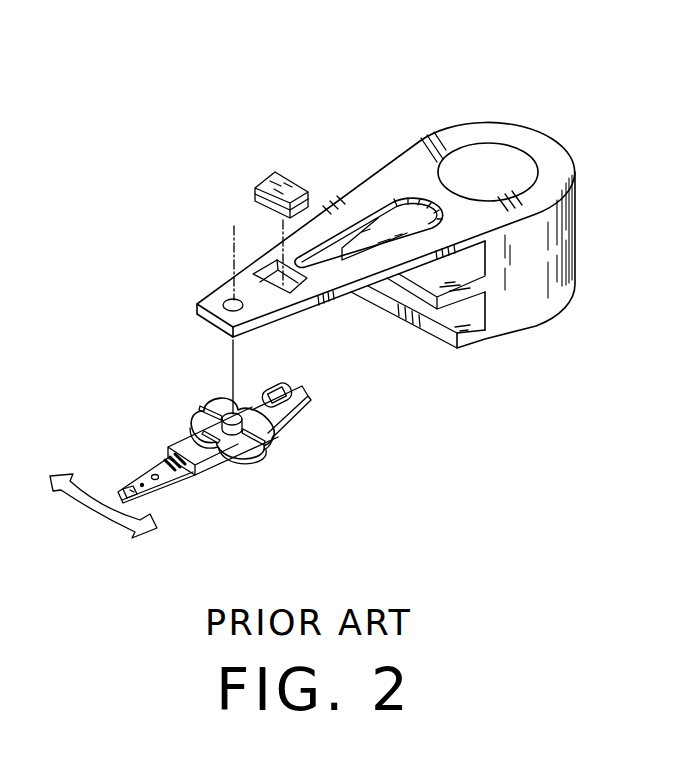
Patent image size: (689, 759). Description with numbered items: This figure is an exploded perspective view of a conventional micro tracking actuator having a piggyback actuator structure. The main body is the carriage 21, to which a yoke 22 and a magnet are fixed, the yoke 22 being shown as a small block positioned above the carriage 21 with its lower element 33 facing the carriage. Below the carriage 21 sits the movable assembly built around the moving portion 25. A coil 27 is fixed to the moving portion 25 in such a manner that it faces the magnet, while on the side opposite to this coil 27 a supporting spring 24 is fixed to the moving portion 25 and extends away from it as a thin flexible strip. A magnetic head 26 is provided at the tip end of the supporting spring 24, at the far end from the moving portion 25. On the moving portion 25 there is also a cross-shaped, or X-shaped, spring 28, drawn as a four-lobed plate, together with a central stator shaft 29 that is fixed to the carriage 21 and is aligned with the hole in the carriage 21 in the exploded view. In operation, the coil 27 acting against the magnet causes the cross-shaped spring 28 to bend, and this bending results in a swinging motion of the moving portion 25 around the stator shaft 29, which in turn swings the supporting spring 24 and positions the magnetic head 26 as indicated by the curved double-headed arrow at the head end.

The carriage 21 is at (401, 152).
The yoke 22 is at (273, 172).
The head element 33 is at (258, 205).
The supporting spring 24 is at (150, 470).
The moving portion 25 is at (187, 445).
The magnetic head 26 is at (130, 503).
The coil 27 is at (306, 386).
The cross-shaped spring 28 is at (266, 450).
The stator shaft 29 is at (226, 413).